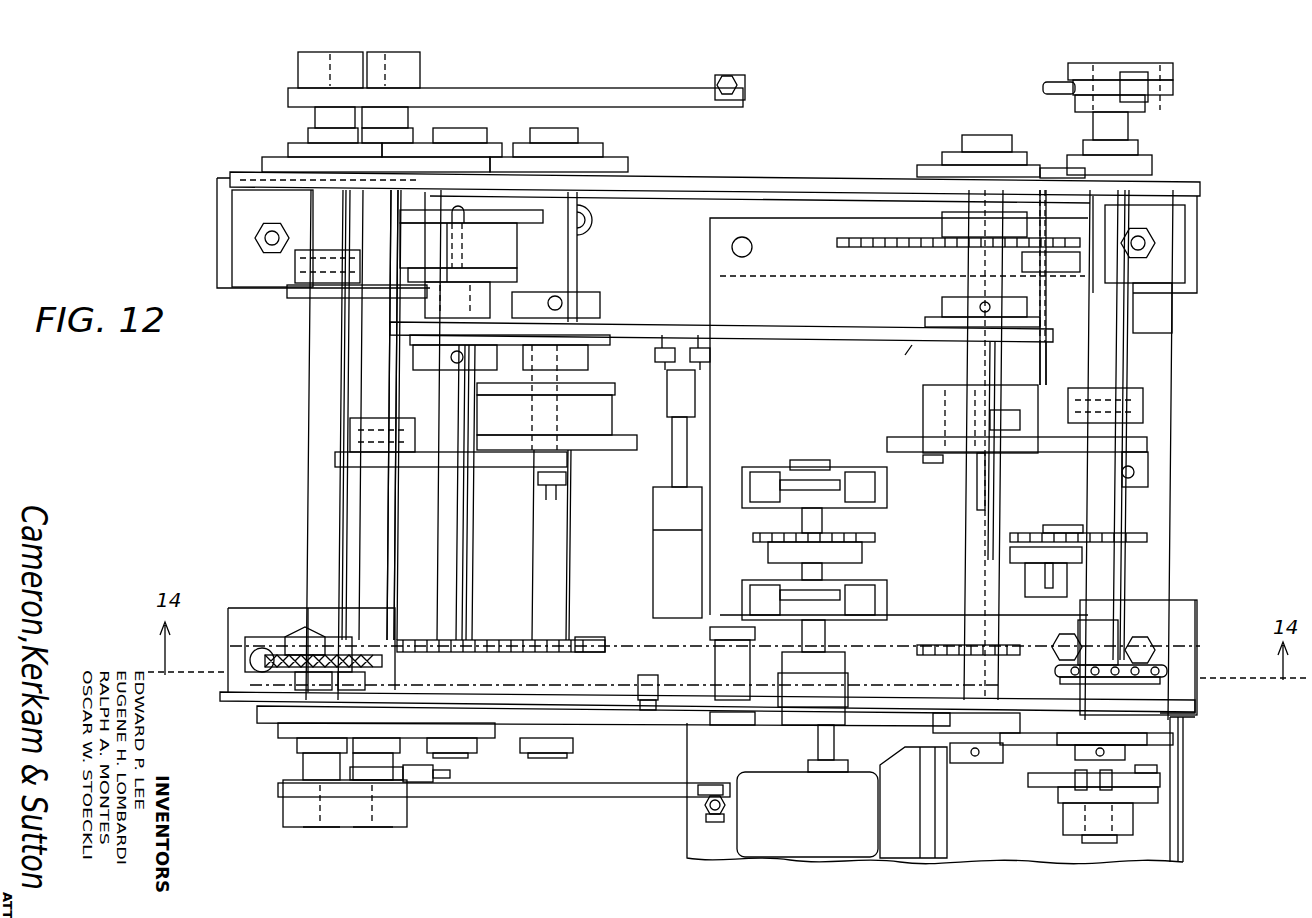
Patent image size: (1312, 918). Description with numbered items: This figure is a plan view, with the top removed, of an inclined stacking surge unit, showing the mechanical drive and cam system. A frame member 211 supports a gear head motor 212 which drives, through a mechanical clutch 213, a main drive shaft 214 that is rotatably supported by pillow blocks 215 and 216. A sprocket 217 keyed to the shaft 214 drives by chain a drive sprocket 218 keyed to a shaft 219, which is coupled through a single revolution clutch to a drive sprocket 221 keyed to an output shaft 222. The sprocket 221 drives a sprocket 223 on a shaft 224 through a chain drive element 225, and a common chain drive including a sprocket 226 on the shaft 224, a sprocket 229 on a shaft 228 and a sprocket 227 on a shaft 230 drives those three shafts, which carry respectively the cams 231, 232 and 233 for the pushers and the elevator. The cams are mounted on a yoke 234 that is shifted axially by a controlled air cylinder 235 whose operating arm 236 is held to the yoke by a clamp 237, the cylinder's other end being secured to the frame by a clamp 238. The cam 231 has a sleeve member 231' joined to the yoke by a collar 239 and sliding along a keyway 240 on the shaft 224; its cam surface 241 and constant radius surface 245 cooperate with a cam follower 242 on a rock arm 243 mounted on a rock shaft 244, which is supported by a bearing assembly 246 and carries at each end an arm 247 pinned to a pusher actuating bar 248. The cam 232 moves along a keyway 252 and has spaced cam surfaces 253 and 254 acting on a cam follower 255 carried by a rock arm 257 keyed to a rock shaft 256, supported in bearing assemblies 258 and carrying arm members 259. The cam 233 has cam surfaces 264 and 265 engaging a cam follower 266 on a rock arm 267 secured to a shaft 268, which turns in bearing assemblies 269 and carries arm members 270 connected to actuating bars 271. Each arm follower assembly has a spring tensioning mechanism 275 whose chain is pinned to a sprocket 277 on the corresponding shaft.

The frame member 211 is at (1185, 797).
The gear head motor 212 is at (1118, 858).
The mechanical clutch 213 is at (845, 685).
The main drive shaft 214 is at (822, 628).
The pillow block 215 is at (760, 585).
The pillow block 216 is at (760, 470).
The sprocket 217 is at (770, 537).
The drive sprocket 218 is at (1010, 535).
The shaft 219 is at (1058, 585).
The drive sprocket 221 is at (1076, 238).
The output shaft 222 is at (1038, 272).
The sprocket 223 is at (975, 258).
The shaft 224 is at (985, 130).
The chain drive element 225 is at (835, 242).
The sprocket 226 is at (1003, 656).
The sprocket 227 is at (600, 630).
The shaft 228 is at (475, 128).
The sprocket 229 is at (482, 625).
The shaft 230 is at (560, 128).
The cam 231 is at (1035, 451).
The sleeve member 231' is at (973, 363).
The cam 232 is at (590, 236).
The cam 233 is at (618, 398).
The yoke 234 is at (812, 330).
The air cylinder 235 is at (660, 512).
The operating arm 236 is at (690, 440).
The clamp 237 is at (715, 345).
The clamp 238 is at (650, 676).
The collar 239 is at (905, 355).
The keyway 240 is at (988, 500).
The cam surface 241 is at (912, 455).
The cam follower 242 is at (1024, 455).
The rock arm 243 is at (1063, 420).
The rock shaft 244 is at (1115, 355).
The constant radius surface 245 is at (930, 402).
The bearing assembly 246 is at (1150, 160).
The arm 247 is at (1145, 65).
The pusher actuating bar 248 is at (1175, 88).
The keyway 252 is at (443, 412).
The cam surface 253 is at (560, 215).
The cam surface 254 is at (530, 270).
The cam follower 255 is at (447, 250).
The rock shaft 256 is at (330, 368).
The rock arm 257 is at (372, 292).
The bearing assembly 258 is at (308, 135).
The arm member 259 is at (290, 94).
The cam surface 264 is at (600, 436).
The cam surface 265 is at (590, 378).
The cam follower 266 is at (572, 450).
The rock arm 267 is at (505, 462).
The shaft 268 is at (392, 535).
The bearing assembly 269 is at (400, 140).
The arm member 270 is at (434, 88).
The actuating bar 271 is at (722, 76).
The spring tensioning mechanism 275 is at (1216, 700).
The sprocket 277 is at (1105, 642).